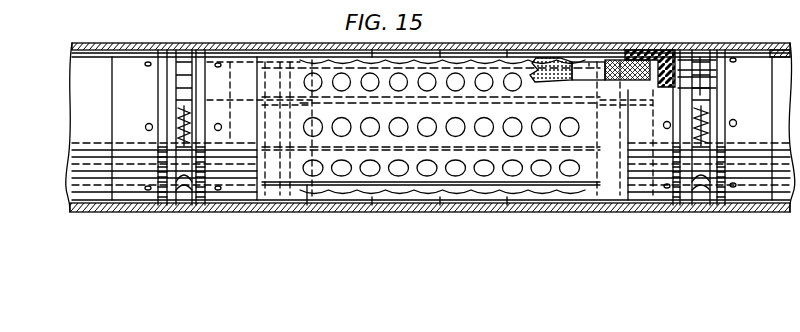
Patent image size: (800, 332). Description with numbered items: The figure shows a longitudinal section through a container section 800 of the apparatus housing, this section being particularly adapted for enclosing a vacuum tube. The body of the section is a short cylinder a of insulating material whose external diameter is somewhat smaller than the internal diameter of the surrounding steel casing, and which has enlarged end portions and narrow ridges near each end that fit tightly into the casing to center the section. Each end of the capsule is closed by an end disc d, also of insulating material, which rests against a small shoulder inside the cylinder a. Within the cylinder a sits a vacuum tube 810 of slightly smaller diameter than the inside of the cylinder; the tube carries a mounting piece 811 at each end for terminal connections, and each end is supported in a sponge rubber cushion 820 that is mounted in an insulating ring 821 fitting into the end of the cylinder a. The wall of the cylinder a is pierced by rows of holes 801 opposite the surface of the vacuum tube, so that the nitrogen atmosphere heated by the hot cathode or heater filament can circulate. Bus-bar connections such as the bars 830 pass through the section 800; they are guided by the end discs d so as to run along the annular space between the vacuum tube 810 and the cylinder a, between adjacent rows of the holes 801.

The container section 800 is at (357, 153).
The holes 801 is at (512, 175).
The vacuum tube 810 is at (557, 78).
The mounting piece 811 is at (289, 68).
The sponge rubber cushion 820 is at (637, 77).
The insulating ring 821 is at (655, 70).
The bars 830 is at (182, 72).
The cylinder a is at (591, 63).
The end disc d is at (690, 77).